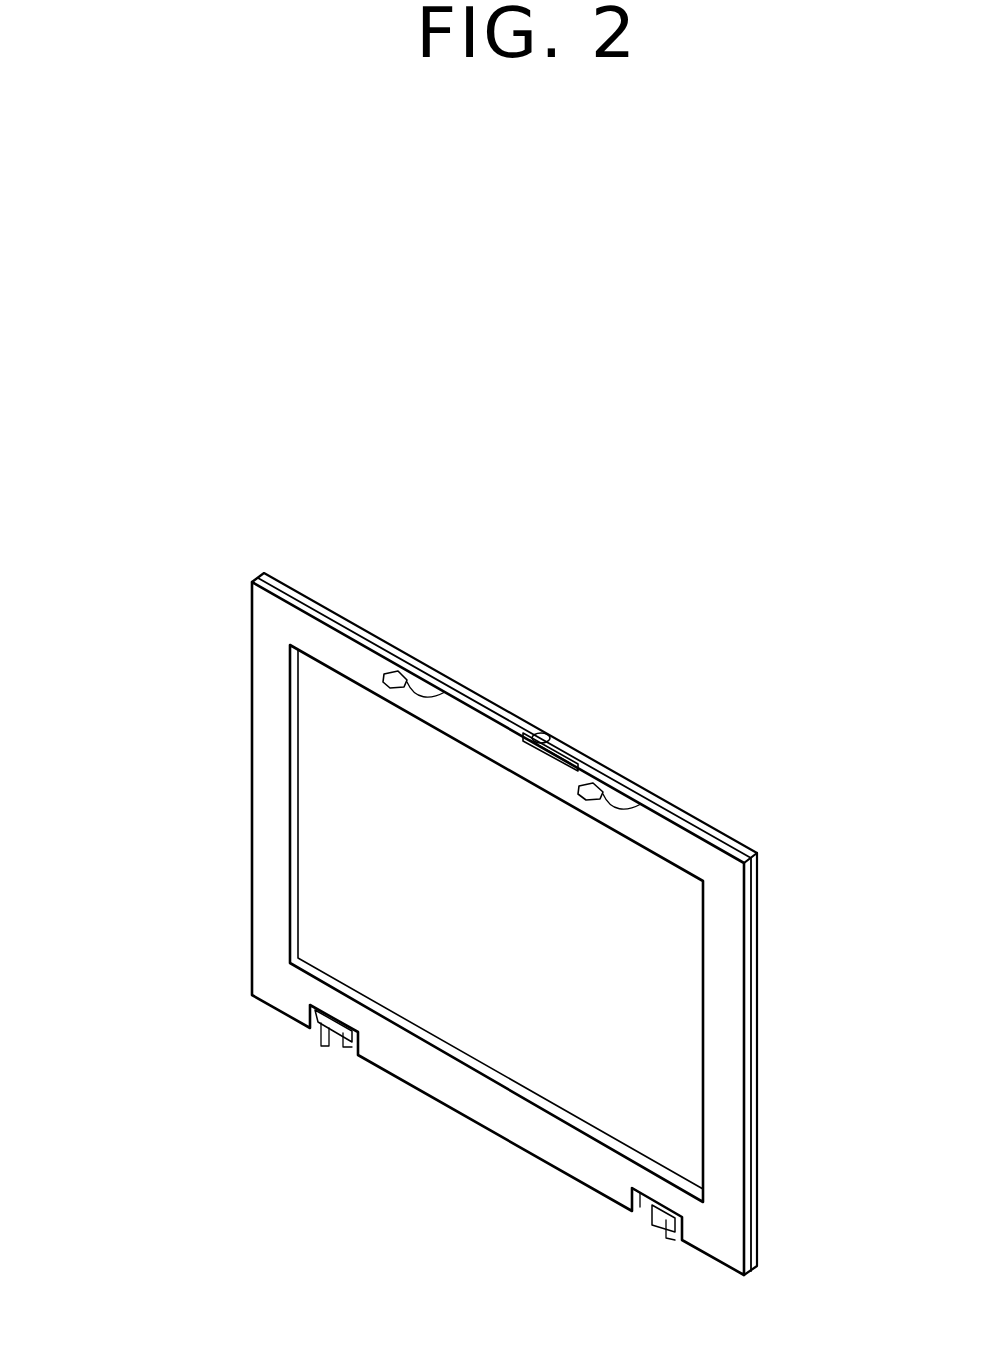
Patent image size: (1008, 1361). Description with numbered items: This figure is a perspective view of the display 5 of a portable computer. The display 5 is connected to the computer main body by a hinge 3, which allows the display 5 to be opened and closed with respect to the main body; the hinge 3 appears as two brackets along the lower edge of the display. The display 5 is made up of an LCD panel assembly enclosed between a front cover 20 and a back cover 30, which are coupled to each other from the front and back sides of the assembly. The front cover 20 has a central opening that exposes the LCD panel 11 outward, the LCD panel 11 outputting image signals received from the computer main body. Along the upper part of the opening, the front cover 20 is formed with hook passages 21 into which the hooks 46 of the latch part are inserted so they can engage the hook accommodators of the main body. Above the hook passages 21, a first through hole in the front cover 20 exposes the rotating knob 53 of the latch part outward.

The display 5 is at (163, 693).
The hinge 3 is at (318, 1053).
The LCD panel 11 is at (678, 1085).
The front cover 20 is at (735, 1010).
The hook passages 21 is at (457, 677).
The back cover 30 is at (760, 933).
The hooks 46 is at (393, 674).
The rotating knob 53 is at (580, 758).